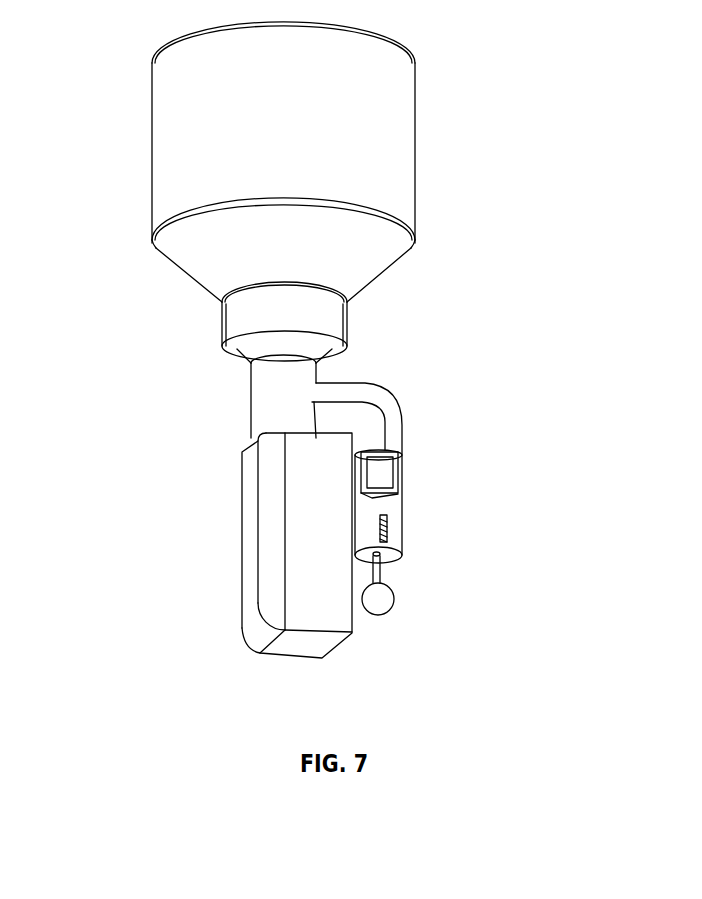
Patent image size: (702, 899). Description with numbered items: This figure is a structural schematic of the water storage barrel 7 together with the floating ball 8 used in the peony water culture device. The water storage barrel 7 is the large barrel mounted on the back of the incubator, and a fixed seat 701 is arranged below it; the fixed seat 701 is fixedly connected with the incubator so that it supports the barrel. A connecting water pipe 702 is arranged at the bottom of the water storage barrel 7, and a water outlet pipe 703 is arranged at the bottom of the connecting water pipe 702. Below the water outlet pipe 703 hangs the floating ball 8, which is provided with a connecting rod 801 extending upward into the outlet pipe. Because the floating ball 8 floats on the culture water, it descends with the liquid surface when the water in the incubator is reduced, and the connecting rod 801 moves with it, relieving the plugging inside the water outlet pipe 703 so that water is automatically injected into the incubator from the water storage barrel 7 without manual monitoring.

The water storage barrel 7 is at (222, 157).
The fixed seat 701 is at (262, 525).
The connecting water pipe 702 is at (400, 419).
The water outlet pipe 703 is at (396, 504).
The connecting rod 801 is at (384, 573).
The floating ball 8 is at (379, 599).